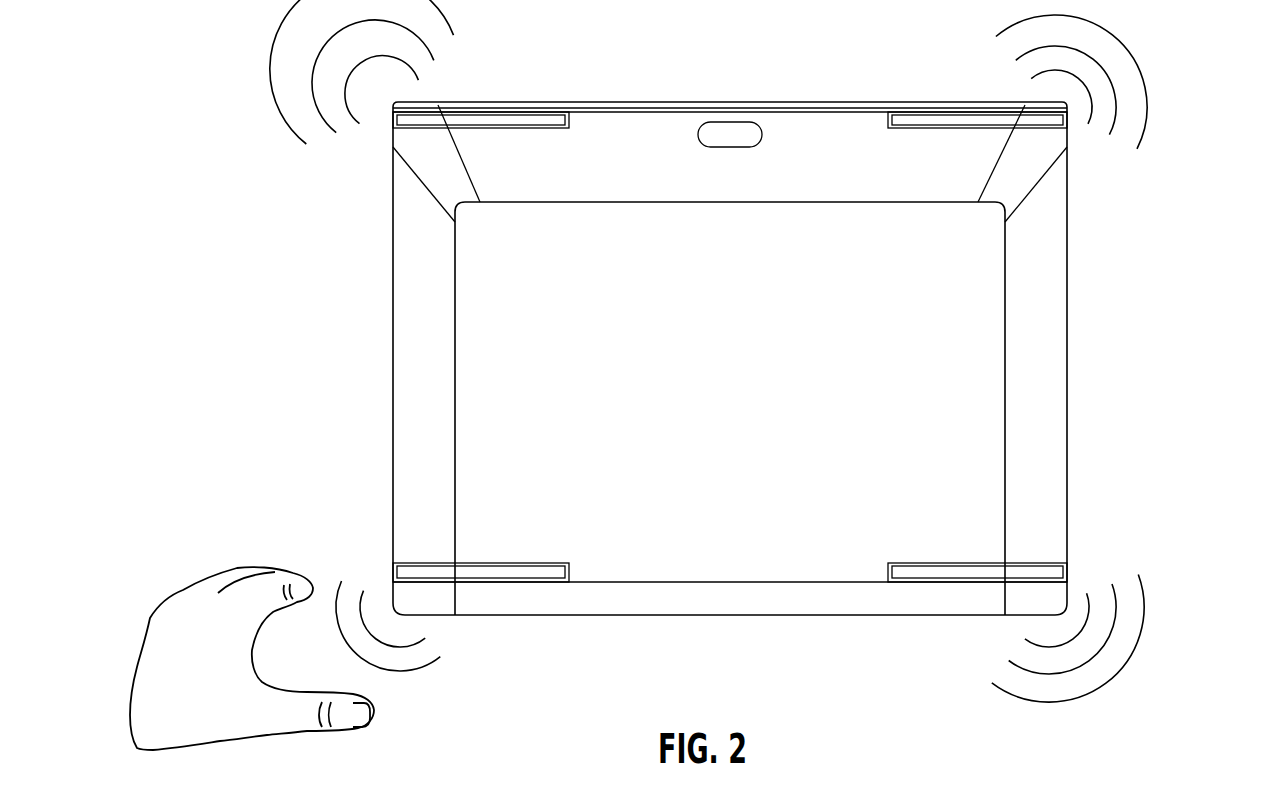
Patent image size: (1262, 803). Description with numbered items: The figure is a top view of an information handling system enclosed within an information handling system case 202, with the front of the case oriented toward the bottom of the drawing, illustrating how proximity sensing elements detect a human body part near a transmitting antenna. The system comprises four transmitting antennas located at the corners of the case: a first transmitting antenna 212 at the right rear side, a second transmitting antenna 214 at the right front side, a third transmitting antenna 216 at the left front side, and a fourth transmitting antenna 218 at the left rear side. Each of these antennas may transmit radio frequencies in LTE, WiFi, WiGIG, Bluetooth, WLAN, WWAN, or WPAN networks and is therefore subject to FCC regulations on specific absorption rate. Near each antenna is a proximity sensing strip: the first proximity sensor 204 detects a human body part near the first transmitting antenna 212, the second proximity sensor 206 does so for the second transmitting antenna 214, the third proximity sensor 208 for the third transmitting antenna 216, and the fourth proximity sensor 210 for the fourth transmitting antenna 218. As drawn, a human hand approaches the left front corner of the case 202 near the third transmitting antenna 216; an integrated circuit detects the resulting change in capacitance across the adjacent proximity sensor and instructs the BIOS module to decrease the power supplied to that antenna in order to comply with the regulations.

The information handling system case 202 is at (393, 359).
The first proximity sensor 204 is at (978, 117).
The second proximity sensor 206 is at (1033, 578).
The third proximity sensor 208 is at (427, 579).
The fourth proximity sensor 210 is at (480, 118).
The first transmitting antenna 212 is at (1030, 100).
The second transmitting antenna 214 is at (1073, 600).
The third transmitting antenna 216 is at (392, 603).
The fourth transmitting antenna 218 is at (405, 102).